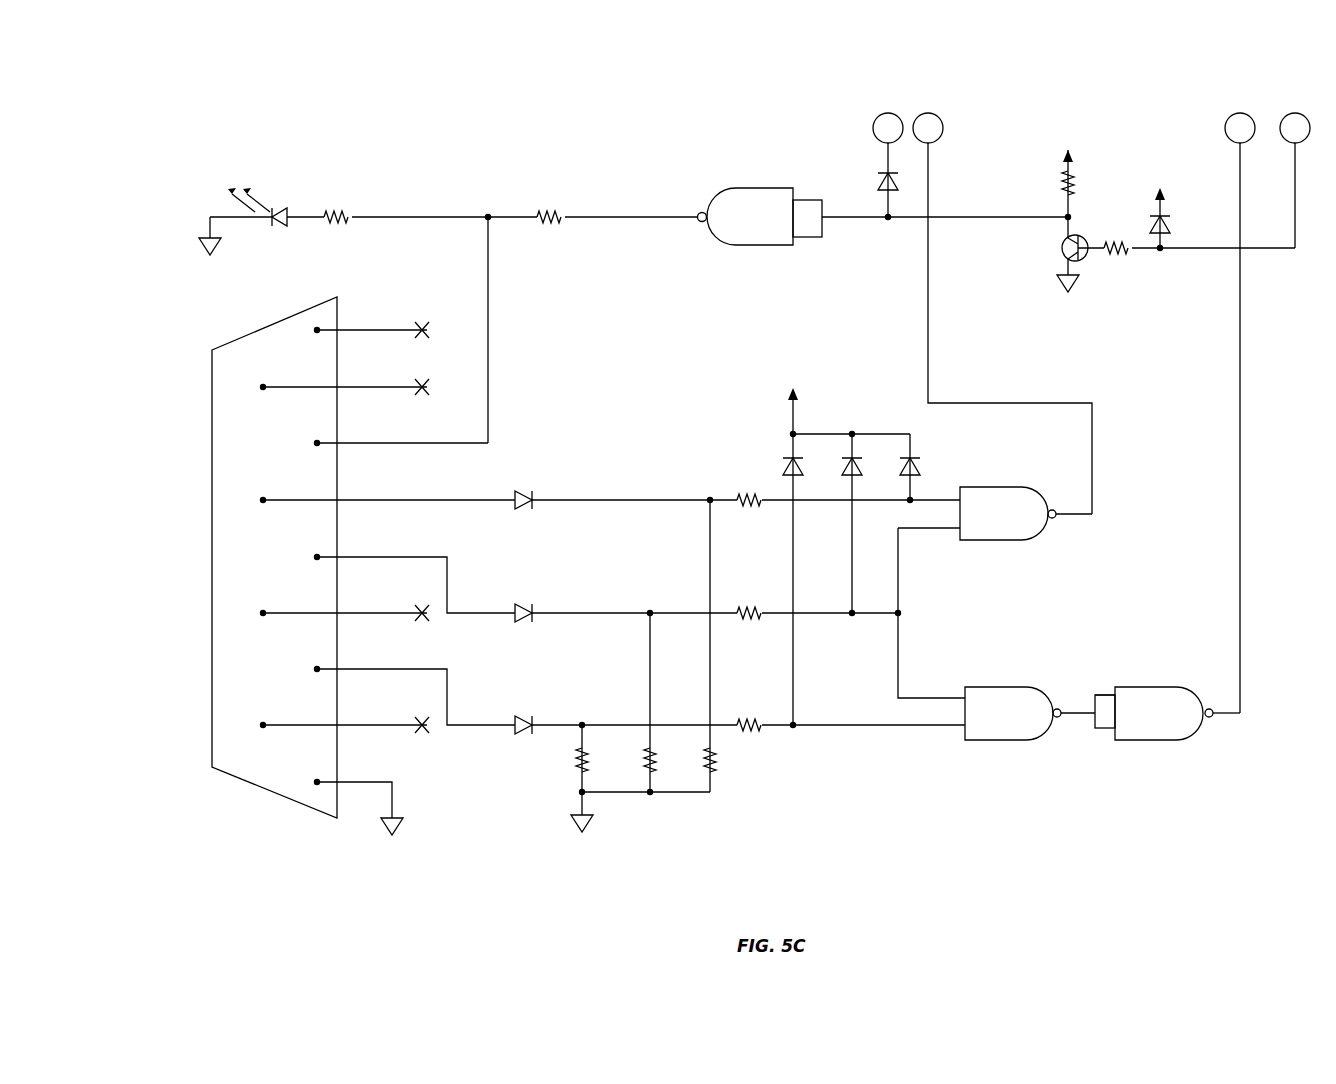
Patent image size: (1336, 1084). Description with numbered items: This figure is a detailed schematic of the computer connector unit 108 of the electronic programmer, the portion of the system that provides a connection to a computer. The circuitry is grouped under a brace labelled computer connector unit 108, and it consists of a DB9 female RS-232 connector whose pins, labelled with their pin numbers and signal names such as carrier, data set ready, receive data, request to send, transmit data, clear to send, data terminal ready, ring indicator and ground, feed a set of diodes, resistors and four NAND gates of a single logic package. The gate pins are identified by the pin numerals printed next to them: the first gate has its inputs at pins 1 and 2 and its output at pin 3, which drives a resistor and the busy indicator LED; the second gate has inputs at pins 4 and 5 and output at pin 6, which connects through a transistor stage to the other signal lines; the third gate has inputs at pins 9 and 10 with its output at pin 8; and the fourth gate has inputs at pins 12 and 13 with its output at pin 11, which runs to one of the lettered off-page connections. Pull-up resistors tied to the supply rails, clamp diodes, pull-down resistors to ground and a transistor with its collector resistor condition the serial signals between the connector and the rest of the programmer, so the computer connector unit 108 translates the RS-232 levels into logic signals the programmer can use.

The computer connector unit 108 is at (721, 517).
The IC11A pin 1 is at (807, 208).
The IC11A pin 2 is at (935, 239).
The IC11A pin 3 is at (636, 207).
The IC11B pin 4 is at (935, 492).
The IC11B pin 5 is at (929, 521).
The IC11B pin 6 is at (1070, 504).
The IC11C pin 8 is at (1074, 703).
The IC11C pin 9 is at (863, 717).
The IC11C pin 10 is at (930, 614).
The IC11D pin 11 is at (1222, 703).
The IC11D pin 12 is at (1101, 730).
The IC11D pin 13 is at (1101, 684).